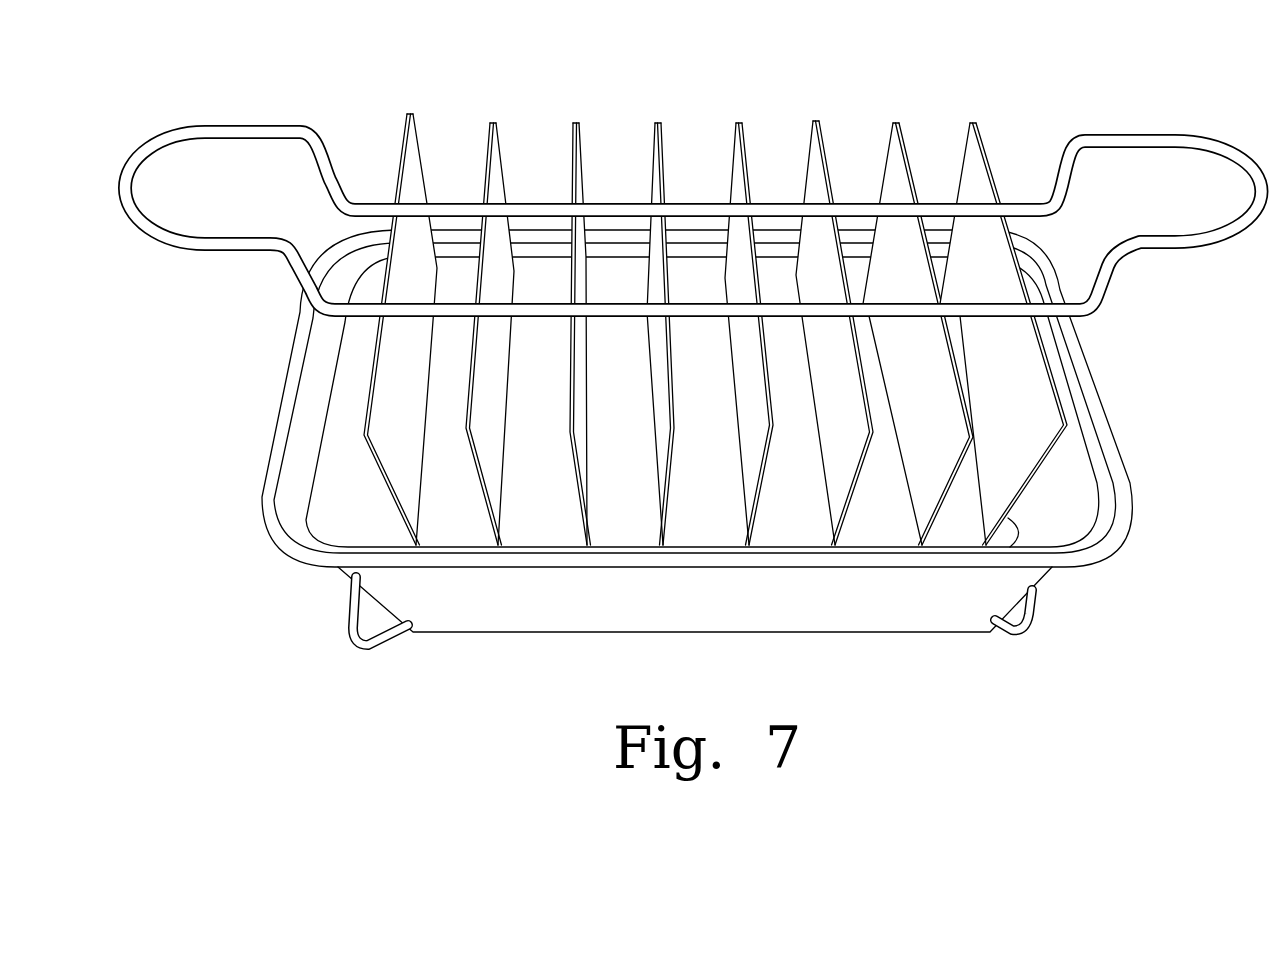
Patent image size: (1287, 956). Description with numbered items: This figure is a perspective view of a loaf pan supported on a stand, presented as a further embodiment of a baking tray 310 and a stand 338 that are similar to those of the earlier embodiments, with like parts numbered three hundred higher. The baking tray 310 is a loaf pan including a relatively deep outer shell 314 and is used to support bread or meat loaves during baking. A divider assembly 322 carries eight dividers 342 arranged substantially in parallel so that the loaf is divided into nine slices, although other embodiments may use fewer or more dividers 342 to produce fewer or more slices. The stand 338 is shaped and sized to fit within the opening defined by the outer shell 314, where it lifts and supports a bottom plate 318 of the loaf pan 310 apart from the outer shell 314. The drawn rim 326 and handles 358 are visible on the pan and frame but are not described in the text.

The baking tray 310 is at (1170, 96).
The outer shell 314 is at (676, 618).
The bottom plate 318 is at (960, 531).
The divider assembly 322 is at (992, 166).
The pan rim 326 is at (1086, 420).
The stand 338 is at (383, 631).
The dividers 342 is at (416, 147).
The handles 358 is at (147, 234).